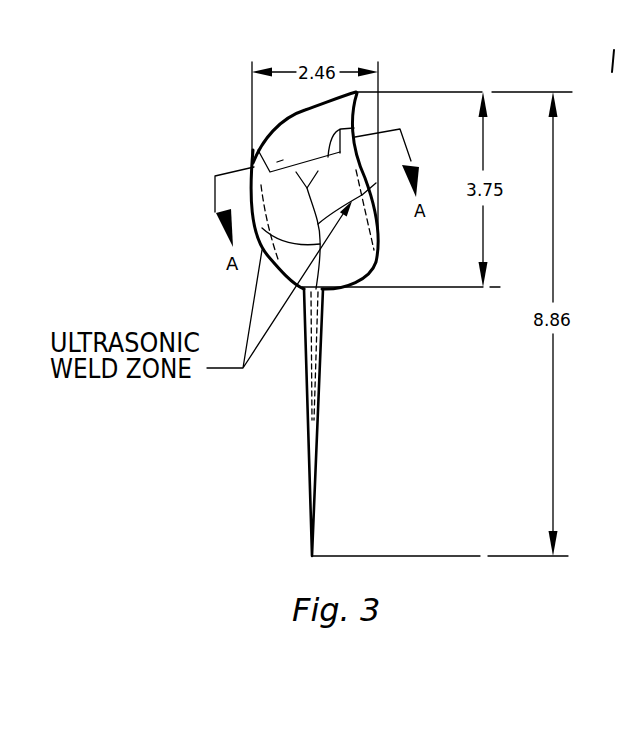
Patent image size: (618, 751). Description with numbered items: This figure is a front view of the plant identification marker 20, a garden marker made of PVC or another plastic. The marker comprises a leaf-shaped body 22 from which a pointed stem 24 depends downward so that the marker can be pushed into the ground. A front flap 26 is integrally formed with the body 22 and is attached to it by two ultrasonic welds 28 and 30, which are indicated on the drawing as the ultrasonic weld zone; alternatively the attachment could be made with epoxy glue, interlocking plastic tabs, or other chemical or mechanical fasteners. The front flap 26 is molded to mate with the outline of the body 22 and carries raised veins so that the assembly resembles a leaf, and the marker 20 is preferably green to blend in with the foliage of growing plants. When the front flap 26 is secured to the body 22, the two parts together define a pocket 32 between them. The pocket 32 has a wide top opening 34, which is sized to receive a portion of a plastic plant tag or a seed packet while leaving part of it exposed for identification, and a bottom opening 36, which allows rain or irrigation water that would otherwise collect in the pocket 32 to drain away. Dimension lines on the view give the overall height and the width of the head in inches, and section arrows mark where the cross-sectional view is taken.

The plant identification marker 20 is at (225, 198).
The leaf-shaped body 22 is at (290, 114).
The pointed stem 24 is at (323, 385).
The front flap 26 is at (351, 255).
The ultrasonic weld 28 is at (260, 210).
The ultrasonic weld 30 is at (358, 197).
The pocket 32 is at (306, 120).
The top opening 34 is at (354, 112).
The bottom opening 36 is at (346, 288).